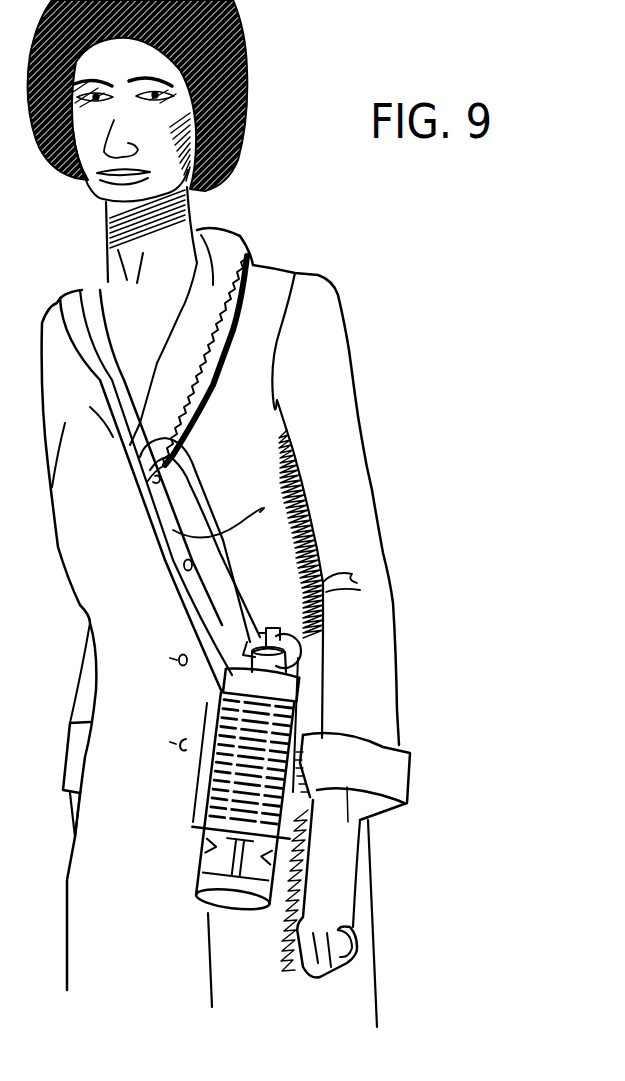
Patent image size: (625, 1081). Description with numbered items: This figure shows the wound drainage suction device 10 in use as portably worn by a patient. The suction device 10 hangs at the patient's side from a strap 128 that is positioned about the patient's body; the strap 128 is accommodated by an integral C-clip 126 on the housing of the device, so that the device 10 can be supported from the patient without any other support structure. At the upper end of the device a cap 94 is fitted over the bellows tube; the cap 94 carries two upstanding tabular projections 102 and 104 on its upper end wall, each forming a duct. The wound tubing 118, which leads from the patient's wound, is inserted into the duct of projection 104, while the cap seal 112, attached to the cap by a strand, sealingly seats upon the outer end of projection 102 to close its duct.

The suction device 10 is at (210, 780).
The cap 94 is at (250, 636).
The tabular projection 102 is at (292, 642).
The tabular projection 104 is at (238, 650).
The cap seal 112 is at (281, 615).
The wound tubing 118 is at (212, 513).
The C-clip 126 is at (195, 706).
The strap 128 is at (160, 538).